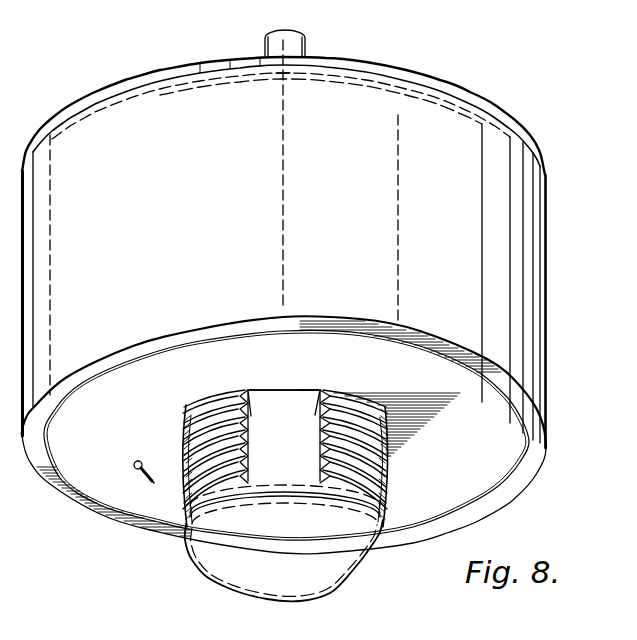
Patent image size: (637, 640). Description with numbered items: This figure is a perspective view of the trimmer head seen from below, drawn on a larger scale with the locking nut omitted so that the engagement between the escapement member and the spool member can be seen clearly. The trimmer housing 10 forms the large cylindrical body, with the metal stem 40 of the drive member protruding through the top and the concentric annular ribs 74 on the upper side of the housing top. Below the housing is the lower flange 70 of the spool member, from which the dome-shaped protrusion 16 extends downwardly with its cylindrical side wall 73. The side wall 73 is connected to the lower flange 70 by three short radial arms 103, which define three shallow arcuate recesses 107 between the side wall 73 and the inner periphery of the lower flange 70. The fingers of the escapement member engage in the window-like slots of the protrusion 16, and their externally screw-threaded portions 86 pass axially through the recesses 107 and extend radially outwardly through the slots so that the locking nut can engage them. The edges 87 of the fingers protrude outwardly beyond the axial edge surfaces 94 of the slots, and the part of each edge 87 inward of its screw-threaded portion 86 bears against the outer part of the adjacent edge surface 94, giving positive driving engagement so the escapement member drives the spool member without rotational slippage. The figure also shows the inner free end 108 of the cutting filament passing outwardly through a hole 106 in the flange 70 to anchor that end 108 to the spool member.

The trimmer housing 10 is at (530, 193).
The dome-shaped protrusion 16 is at (349, 558).
The metal stem 40 is at (292, 45).
The lower annular flange 70 is at (502, 462).
The cylindrical side wall 73 is at (388, 527).
The concentric annular ribs 74 is at (400, 68).
The screw-threaded portion 86 is at (190, 440).
The edge 87 is at (258, 457).
The axial edge surface 94 is at (315, 415).
The short radial arm 103 is at (312, 387).
The hole 106 is at (137, 461).
The shallow arcuate recess 107 is at (248, 392).
The inner free end 108 is at (140, 481).